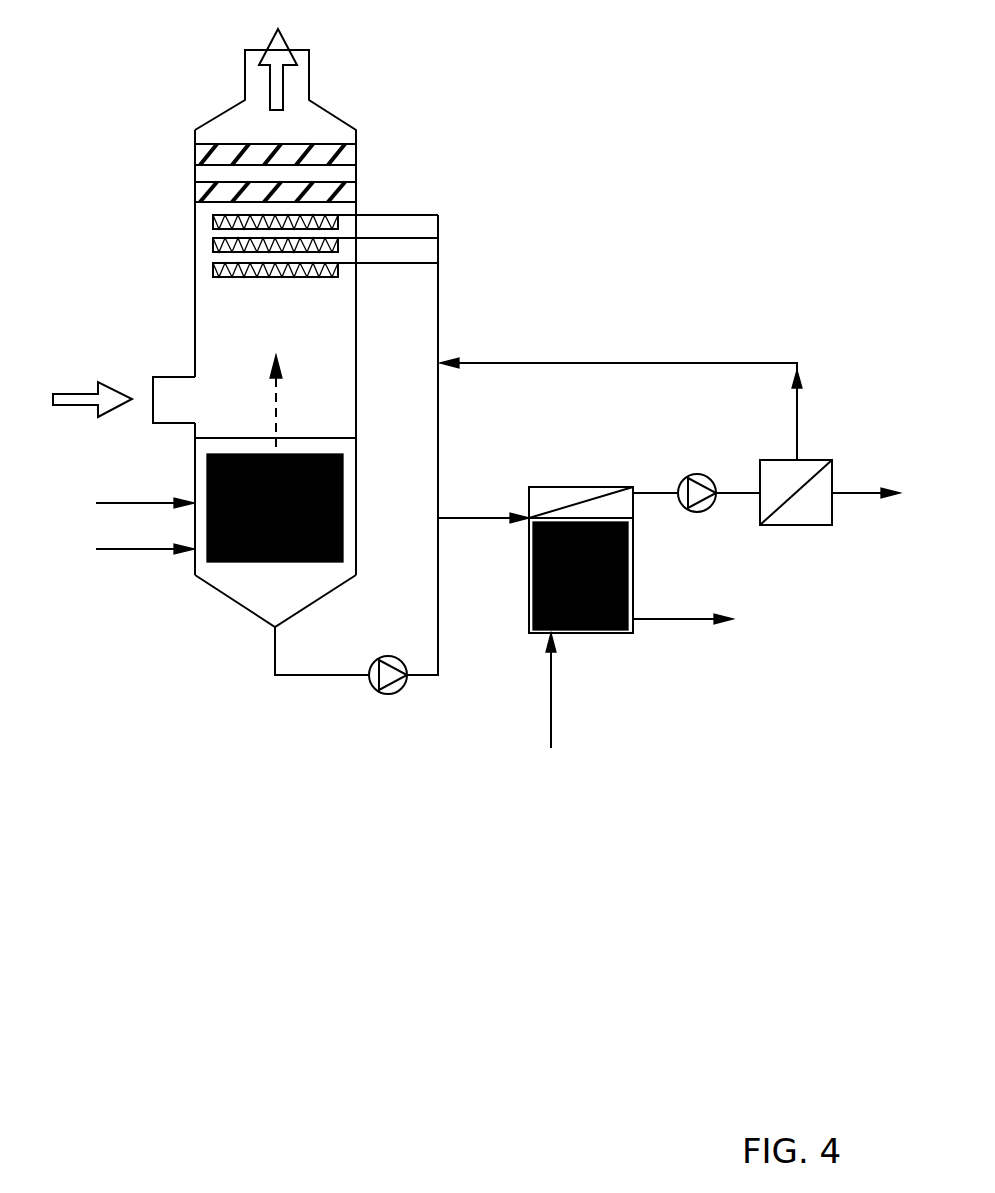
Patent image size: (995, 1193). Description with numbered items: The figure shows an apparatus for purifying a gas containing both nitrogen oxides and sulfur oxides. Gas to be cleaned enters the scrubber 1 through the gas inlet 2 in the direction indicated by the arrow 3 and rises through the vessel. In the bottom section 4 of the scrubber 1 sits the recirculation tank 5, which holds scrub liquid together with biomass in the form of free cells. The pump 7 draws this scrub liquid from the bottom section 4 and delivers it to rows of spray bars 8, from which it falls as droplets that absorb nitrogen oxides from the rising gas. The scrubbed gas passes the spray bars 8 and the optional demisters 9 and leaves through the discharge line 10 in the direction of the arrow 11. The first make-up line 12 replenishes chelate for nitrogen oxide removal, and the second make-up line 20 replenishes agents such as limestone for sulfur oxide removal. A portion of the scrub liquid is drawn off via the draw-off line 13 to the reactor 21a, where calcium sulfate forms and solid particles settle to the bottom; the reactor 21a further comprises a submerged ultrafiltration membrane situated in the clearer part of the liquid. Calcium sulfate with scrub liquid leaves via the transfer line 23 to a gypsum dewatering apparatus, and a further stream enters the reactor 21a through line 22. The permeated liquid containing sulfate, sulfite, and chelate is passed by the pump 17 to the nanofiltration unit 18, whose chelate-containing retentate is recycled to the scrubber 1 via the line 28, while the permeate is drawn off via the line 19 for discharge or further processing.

The scrubber 1 is at (323, 103).
The gas inlet 2 is at (177, 377).
The arrow 3 is at (77, 393).
The bottom section 4 is at (313, 593).
The recirculation tank 5 is at (342, 471).
The pump 7 is at (397, 693).
The spray bars 8 is at (212, 273).
The demisters 9 is at (335, 143).
The discharge line 10 is at (308, 50).
The arrow 11 is at (268, 42).
The first make-up line 12 is at (97, 549).
The draw-off line 13 is at (460, 518).
The pump 17 is at (691, 511).
The nanofiltration unit 18 is at (790, 525).
The line 19 is at (855, 492).
The second make-up line 20 is at (97, 503).
The reactor 21a is at (633, 587).
The supply line 22 is at (552, 713).
The transfer line 23 is at (665, 622).
The line 28 is at (563, 363).